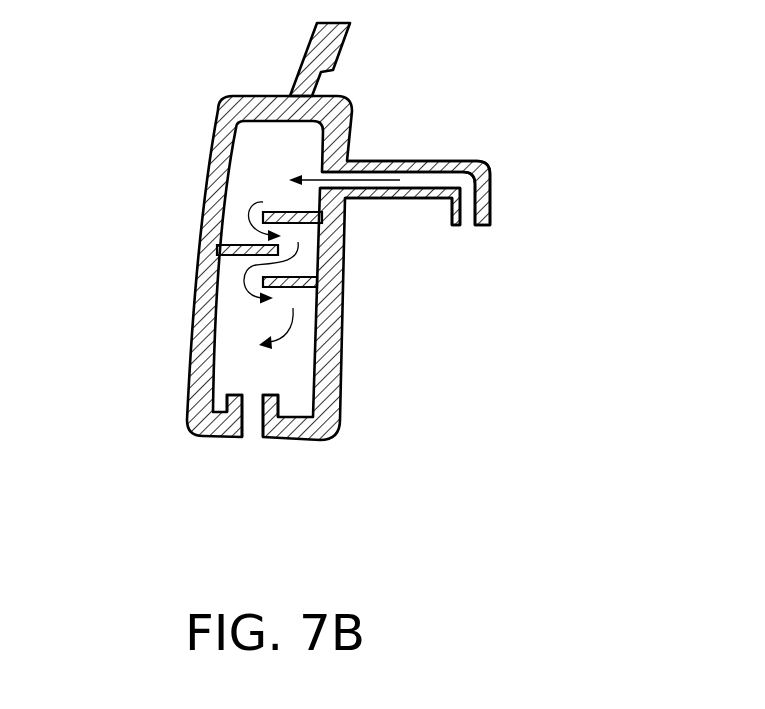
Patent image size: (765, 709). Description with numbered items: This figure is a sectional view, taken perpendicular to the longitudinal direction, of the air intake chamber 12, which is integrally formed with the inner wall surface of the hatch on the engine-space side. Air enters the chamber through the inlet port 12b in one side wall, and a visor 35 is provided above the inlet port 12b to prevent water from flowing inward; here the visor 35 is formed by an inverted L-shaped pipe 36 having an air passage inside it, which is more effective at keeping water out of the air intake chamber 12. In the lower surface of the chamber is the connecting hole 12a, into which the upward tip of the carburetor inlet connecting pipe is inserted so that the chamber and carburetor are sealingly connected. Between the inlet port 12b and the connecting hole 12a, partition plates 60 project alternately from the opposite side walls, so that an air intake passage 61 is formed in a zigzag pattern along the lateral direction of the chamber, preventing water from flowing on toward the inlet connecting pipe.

The air intake chamber 12 is at (262, 143).
The connecting hole 12a is at (250, 420).
The inlet port 12b is at (357, 178).
The visor 35 is at (445, 141).
The inverted L-shaped pipe 36 is at (450, 160).
The partition plates 60 is at (240, 244).
The air intake passage 61 is at (222, 293).